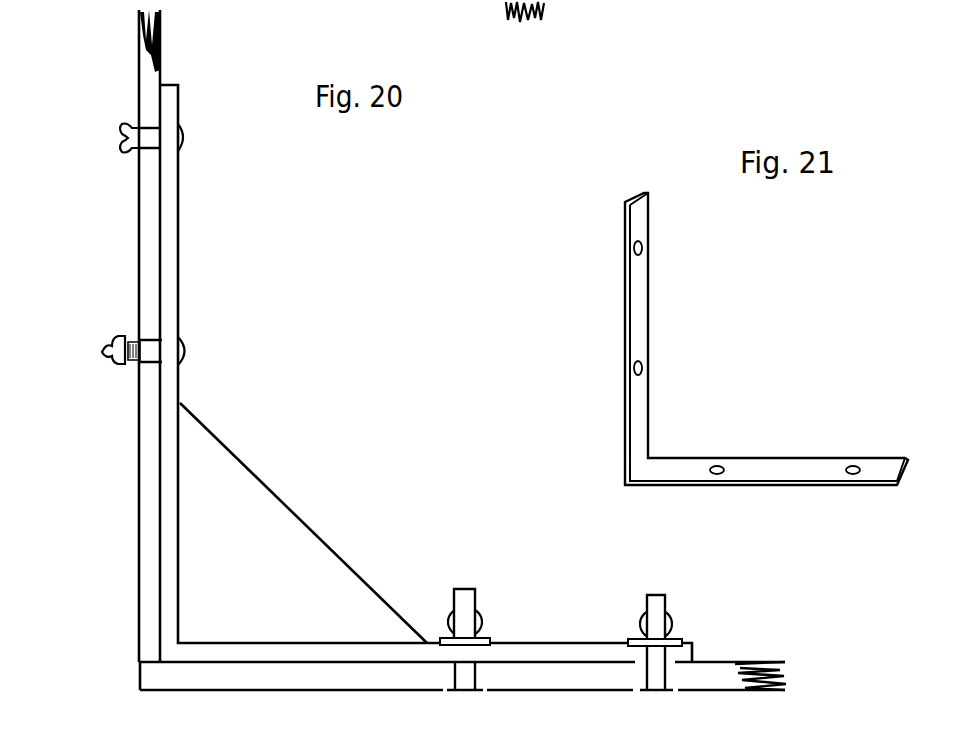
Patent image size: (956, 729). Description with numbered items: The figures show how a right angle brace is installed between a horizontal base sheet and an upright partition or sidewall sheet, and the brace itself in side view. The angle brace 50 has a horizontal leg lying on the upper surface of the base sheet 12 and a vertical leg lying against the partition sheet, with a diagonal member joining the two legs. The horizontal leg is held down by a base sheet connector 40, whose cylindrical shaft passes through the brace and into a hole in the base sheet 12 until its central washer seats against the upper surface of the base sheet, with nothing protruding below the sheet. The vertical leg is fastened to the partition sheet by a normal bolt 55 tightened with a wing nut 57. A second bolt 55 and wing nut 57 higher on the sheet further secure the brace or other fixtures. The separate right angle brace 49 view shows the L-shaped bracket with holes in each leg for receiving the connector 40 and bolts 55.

In FIG. 20, the base sheet 12 is at (702, 672).
In FIG. 20, the base sheet connector 40 is at (474, 592).
In FIG. 20, the angle brace 50 is at (257, 530).
In FIG. 20, the bolt 55 is at (152, 350).
In FIG. 20, the wing nut 57 is at (113, 338).
In FIG. 21, the angle bracket 49 is at (788, 468).